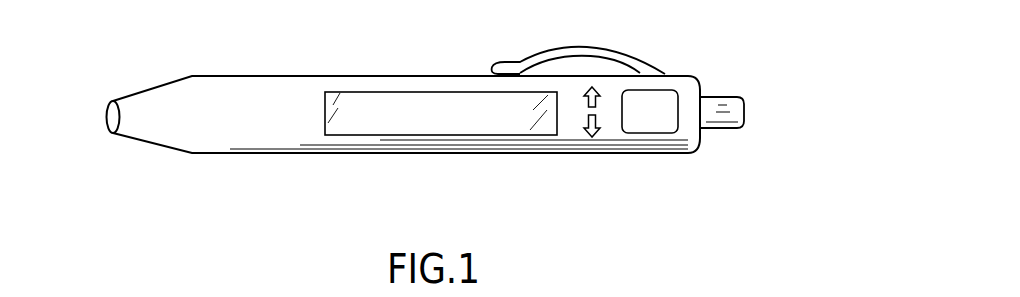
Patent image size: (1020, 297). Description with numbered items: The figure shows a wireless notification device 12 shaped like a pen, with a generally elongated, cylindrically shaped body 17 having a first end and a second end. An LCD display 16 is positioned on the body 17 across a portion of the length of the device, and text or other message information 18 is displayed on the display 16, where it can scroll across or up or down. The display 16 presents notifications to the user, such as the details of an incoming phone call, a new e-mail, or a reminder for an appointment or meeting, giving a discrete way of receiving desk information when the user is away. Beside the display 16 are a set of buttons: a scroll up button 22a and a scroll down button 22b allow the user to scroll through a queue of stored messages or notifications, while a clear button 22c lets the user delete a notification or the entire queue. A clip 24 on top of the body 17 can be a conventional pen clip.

The wireless notification device 12 is at (411, 139).
The display 16 is at (441, 115).
The body 17 is at (233, 85).
The message information 18 is at (357, 125).
The scroll up button 22a is at (585, 104).
The scroll down button 22b is at (592, 138).
The clear button 22c is at (680, 130).
The clip 24 is at (613, 44).